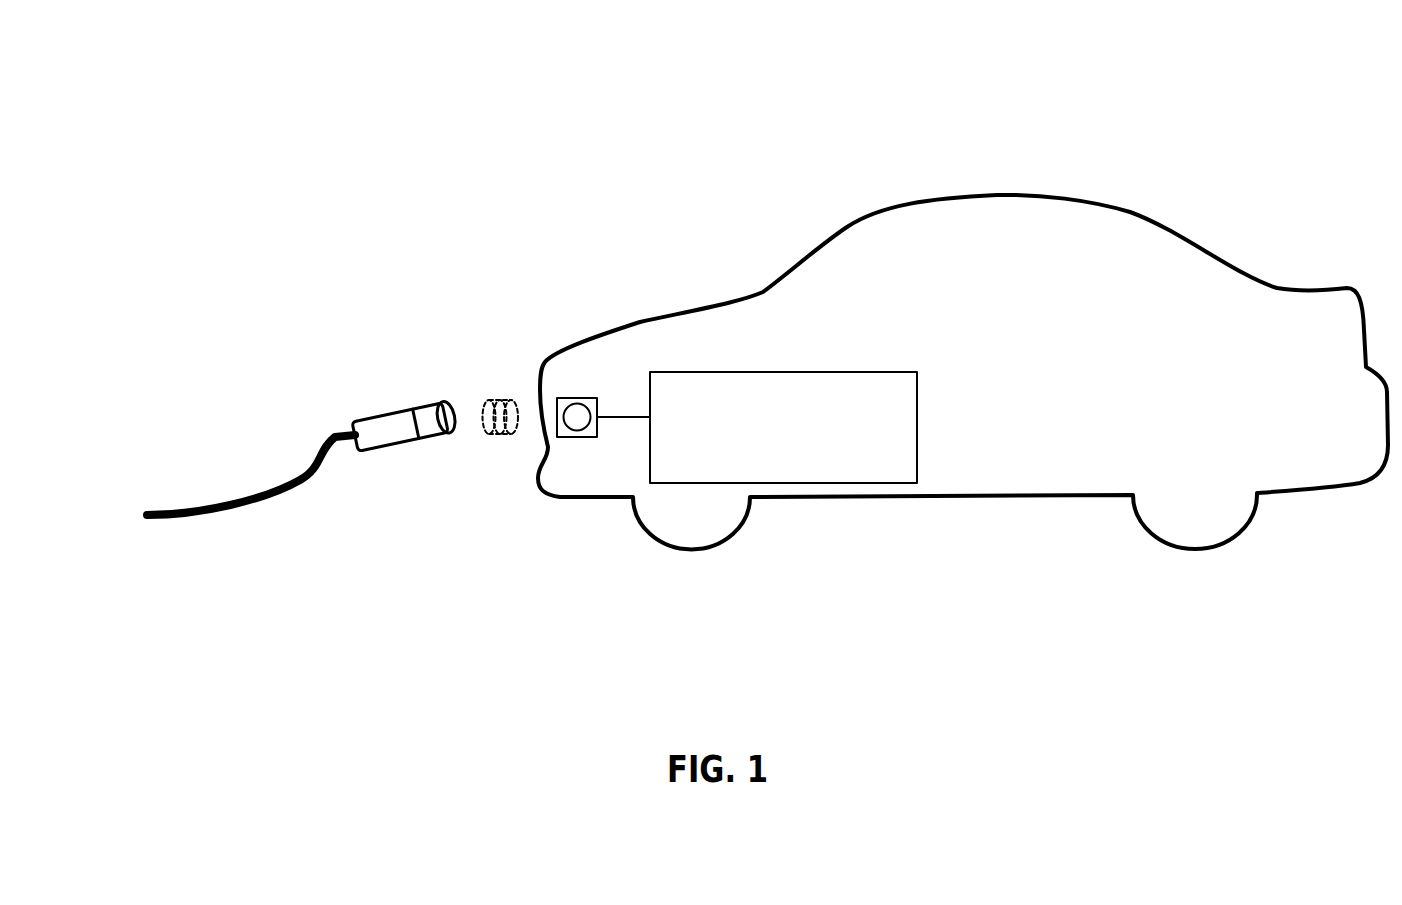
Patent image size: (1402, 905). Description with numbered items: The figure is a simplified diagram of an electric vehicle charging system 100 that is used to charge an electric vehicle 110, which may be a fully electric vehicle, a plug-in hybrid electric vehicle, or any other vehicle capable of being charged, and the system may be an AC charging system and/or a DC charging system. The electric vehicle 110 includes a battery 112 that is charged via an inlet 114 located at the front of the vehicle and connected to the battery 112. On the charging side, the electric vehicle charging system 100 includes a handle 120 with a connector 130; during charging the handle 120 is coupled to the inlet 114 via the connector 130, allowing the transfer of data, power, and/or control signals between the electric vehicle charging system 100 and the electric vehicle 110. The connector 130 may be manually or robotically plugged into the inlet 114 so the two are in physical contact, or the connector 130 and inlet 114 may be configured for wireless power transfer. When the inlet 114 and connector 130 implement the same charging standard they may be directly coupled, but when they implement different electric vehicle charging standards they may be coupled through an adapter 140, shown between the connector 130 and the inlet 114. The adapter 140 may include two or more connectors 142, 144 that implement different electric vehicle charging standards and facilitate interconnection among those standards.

The electric vehicle charging system 100 is at (242, 131).
The electric vehicle 110 is at (1167, 228).
The battery 112 is at (893, 372).
The inlet 114 is at (592, 398).
The handle 120 is at (350, 424).
The connector 130 is at (422, 407).
The adapter 140 is at (502, 434).
The connector 142 is at (495, 433).
The connector 144 is at (507, 435).